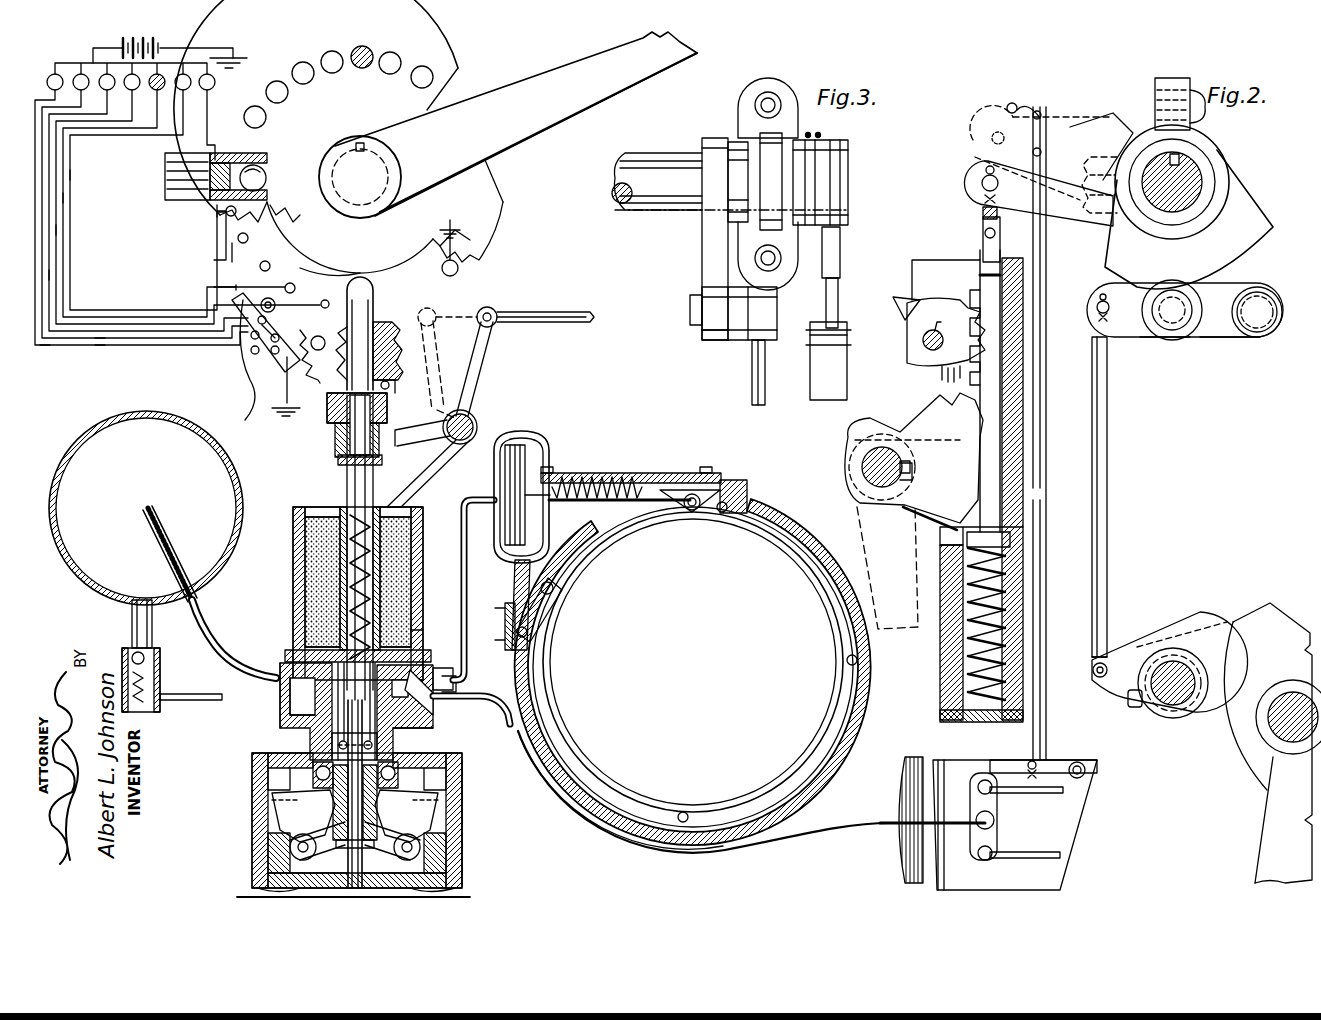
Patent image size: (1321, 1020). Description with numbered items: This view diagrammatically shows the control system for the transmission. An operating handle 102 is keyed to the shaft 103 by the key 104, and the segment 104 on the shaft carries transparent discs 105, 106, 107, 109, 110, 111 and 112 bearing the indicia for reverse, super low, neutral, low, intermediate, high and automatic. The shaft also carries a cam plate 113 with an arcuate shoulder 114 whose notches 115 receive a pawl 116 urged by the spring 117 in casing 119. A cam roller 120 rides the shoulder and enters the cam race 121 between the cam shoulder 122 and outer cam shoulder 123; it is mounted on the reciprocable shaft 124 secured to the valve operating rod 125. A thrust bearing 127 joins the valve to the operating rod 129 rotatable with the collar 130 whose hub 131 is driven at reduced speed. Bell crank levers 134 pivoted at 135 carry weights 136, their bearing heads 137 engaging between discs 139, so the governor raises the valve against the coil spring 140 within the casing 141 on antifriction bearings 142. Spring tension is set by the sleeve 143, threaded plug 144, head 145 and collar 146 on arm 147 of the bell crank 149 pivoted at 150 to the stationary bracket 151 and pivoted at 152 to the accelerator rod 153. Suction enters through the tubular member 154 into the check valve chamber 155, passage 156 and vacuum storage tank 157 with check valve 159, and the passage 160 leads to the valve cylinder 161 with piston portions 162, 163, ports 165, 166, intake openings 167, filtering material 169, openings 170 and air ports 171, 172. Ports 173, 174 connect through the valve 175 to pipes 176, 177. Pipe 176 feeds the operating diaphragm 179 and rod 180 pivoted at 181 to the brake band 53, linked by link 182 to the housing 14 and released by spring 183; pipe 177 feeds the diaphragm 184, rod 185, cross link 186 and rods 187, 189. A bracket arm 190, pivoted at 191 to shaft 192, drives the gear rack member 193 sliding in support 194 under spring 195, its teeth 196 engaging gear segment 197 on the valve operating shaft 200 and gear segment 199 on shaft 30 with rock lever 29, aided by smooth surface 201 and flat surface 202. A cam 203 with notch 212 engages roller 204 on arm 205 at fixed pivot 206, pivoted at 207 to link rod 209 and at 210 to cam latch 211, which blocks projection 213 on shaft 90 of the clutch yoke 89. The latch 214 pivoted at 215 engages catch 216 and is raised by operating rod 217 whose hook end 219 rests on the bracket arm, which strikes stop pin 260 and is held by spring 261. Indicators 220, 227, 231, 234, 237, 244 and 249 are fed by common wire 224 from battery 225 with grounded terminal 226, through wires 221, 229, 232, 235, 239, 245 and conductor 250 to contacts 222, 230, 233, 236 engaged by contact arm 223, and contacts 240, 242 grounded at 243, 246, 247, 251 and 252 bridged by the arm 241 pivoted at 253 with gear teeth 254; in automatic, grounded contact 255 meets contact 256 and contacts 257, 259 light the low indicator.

In FIG. 2, the housing 14 is at (750, 490).
In FIG. 2, the rock lever 29 is at (858, 535).
In FIG. 2, the shaft 30 is at (870, 462).
In FIG. 2, the brake band 53 is at (770, 512).
In FIG. 2, the clutch operating yoke or lever 89 is at (1265, 815).
In FIG. 2, the shaft 90 is at (1260, 725).
In FIG. 2, the operating handle 102 is at (536, 74).
In FIG. 2, the shaft 103 is at (395, 168).
In FIG. 3, the shaft 103 is at (660, 212).
In FIG. 2, the segment 104 is at (458, 68).
In FIG. 2, the transparent disc 105 is at (421, 89).
In FIG. 2, the transparent disc 106 is at (390, 75).
In FIG. 2, the disc 107 is at (363, 69).
In FIG. 2, the disc 109 is at (312, 78).
In FIG. 2, the disc 110 is at (287, 100).
In FIG. 2, the disc 111 is at (264, 124).
In FIG. 2, the disc 112 is at (258, 140).
In FIG. 2, the cam plate 113 is at (358, 258).
In FIG. 2, the arcuate shoulder 114 is at (318, 258).
In FIG. 2, the notches 115 is at (267, 179).
In FIG. 2, the pawl 116 is at (226, 211).
In FIG. 2, the spring 117 is at (208, 156).
In FIG. 2, the casing 119 is at (167, 176).
In FIG. 2, the cam roller 120 is at (360, 277).
In FIG. 2, the cam race 121 is at (480, 311).
In FIG. 2, the cam shoulder 122 is at (427, 237).
In FIG. 2, the outer cam shoulder 123 is at (460, 242).
In FIG. 2, the reciprocable shaft 124 is at (385, 388).
In FIG. 2, the valve operating rod 125 is at (348, 484).
In FIG. 2, the thrust bearing 127 is at (395, 740).
In FIG. 2, the operating rod 129 is at (460, 822).
In FIG. 2, the collar or drum 130 is at (460, 862).
In FIG. 2, the hub 131 is at (262, 750).
In FIG. 2, the bell crank levers 134 is at (272, 795).
In FIG. 2, the pivot 135 is at (460, 840).
In FIG. 2, the weights 136 is at (460, 800).
In FIG. 2, the bearing head 137 is at (290, 840).
In FIG. 2, the spaced discs or collars 139 is at (280, 815).
In FIG. 2, the coil spring 140 is at (345, 582).
In FIG. 2, the casing 141 is at (268, 768).
In FIG. 2, the antifriction bearings 142 is at (462, 758).
In FIG. 2, the sleeve 143 is at (346, 470).
In FIG. 2, the threaded plug 144 is at (330, 440).
In FIG. 2, the head 145 is at (340, 400).
In FIG. 2, the collar 146 is at (330, 420).
In FIG. 2, the arm 147 is at (395, 446).
In FIG. 2, the bell crank 149 is at (490, 360).
In FIG. 2, the pivot 150 is at (470, 418).
In FIG. 2, the stationary bracket 151 is at (440, 478).
In FIG. 2, the pivot 152 is at (497, 322).
In FIG. 2, the rod 153 is at (580, 322).
In FIG. 2, the tubular member 154 is at (190, 694).
In FIG. 2, the check valve chamber 155 is at (160, 668).
In FIG. 2, the passage 156 is at (152, 624).
In FIG. 2, the vacuum storage tank 157 is at (243, 512).
In FIG. 2, the check valve 159 is at (148, 654).
In FIG. 2, the passage 160 is at (205, 615).
In FIG. 2, the valve cylinder 161 is at (280, 688).
In FIG. 2, the piston portion 162 is at (300, 712).
In FIG. 2, the piston portion 163 is at (300, 652).
In FIG. 2, the port 165 is at (282, 663).
In FIG. 2, the valve port 166 is at (332, 740).
In FIG. 2, the intake openings 167 is at (306, 510).
In FIG. 2, the filtering material 169 is at (300, 546).
In FIG. 2, the openings 170 is at (416, 622).
In FIG. 2, the air port 171 is at (312, 660).
In FIG. 2, the air port 172 is at (290, 698).
In FIG. 2, the port 173 is at (420, 663).
In FIG. 2, the port 174 is at (448, 700).
In FIG. 2, the valve 175 is at (460, 680).
In FIG. 2, the pipe 176 is at (468, 558).
In FIG. 2, the pipe 177 is at (514, 764).
In FIG. 2, the operating diaphragm 179 is at (540, 447).
In FIG. 2, the rod 180 is at (600, 487).
In FIG. 2, the pivot 181 is at (692, 492).
In FIG. 2, the link 182 is at (552, 620).
In FIG. 2, the spring 183 is at (640, 473).
In FIG. 2, the diaphragm 184 is at (903, 757).
In FIG. 2, the rod 185 is at (945, 790).
In FIG. 2, the cross link 186 is at (1000, 840).
In FIG. 2, the rod 187 is at (1060, 790).
In FIG. 2, the rod 189 is at (1060, 858).
In FIG. 2, the bracket arm 190 is at (981, 183).
In FIG. 2, the pivot 191 is at (968, 175).
In FIG. 2, the shaft 192 is at (983, 212).
In FIG. 3, the shaft 192 is at (838, 255).
In FIG. 2, the gear rack member 193 is at (1010, 415).
In FIG. 3, the gear rack member 193 is at (812, 370).
In FIG. 2, the support 194 is at (1012, 470).
In FIG. 2, the spring 195 is at (1008, 590).
In FIG. 2, the teeth 196 is at (985, 330).
In FIG. 2, the gear segment 197 is at (900, 300).
In FIG. 2, the gear segment 199 is at (910, 420).
In FIG. 2, the valve operating shaft 200 is at (925, 345).
In FIG. 2, the smooth surface 201 is at (915, 262).
In FIG. 2, the flat surface 202 is at (980, 500).
In FIG. 2, the cam 203 is at (1200, 200).
In FIG. 3, the cam 203 is at (700, 245).
In FIG. 2, the roller 204 is at (1173, 338).
In FIG. 3, the roller 204 is at (705, 300).
In FIG. 2, the arm 205 is at (1228, 337).
In FIG. 2, the fixed pivot 206 is at (1257, 290).
In FIG. 2, the pivot 207 is at (1098, 300).
In FIG. 2, the link rod 209 is at (1108, 590).
In FIG. 3, the link rod 209 is at (764, 383).
In FIG. 2, the pivot 210 is at (1100, 680).
In FIG. 2, the cam latch 211 is at (1185, 620).
In FIG. 2, the notch 212 is at (1185, 283).
In FIG. 2, the projection 213 is at (1258, 615).
In FIG. 2, the latch 214 is at (1055, 762).
In FIG. 2, the pivot 215 is at (1098, 748).
In FIG. 2, the catch 216 is at (1030, 765).
In FIG. 2, the operating rod 217 is at (1038, 530).
In FIG. 2, the hook end 219 is at (1040, 150).
In FIG. 2, the indicator 220 is at (207, 120).
In FIG. 2, the wire 221 is at (63, 198).
In FIG. 2, the contact 222 is at (296, 283).
In FIG. 2, the contact arm 223 is at (240, 243).
In FIG. 2, the common wire 224 is at (82, 74).
In FIG. 2, the battery 225 is at (161, 45).
In FIG. 2, the terminal 226 is at (233, 56).
In FIG. 2, the indicator 227 is at (183, 120).
In FIG. 2, the wire 229 is at (70, 175).
In FIG. 2, the contact 230 is at (270, 260).
In FIG. 2, the indicator 231 is at (156, 121).
In FIG. 2, the wire 232 is at (56, 230).
In FIG. 2, the contact 233 is at (232, 258).
In FIG. 2, the low gear indicator 234 is at (132, 121).
In FIG. 2, the wire 235 is at (49, 275).
In FIG. 2, the contact 236 is at (238, 237).
In FIG. 2, the intermediate gear indicator 237 is at (107, 114).
In FIG. 2, the conductor wire 239 is at (100, 345).
In FIG. 2, the contact 240 is at (236, 298).
In FIG. 2, the arm 241 is at (318, 339).
In FIG. 2, the contact 242 is at (287, 380).
In FIG. 2, the ground 243 is at (287, 395).
In FIG. 2, the high gear indicator 244 is at (81, 107).
In FIG. 2, the wire 245 is at (100, 338).
In FIG. 2, the contact 246 is at (245, 345).
In FIG. 2, the grounded contact 247 is at (268, 352).
In FIG. 2, the overdrive indicator 249 is at (48, 77).
In FIG. 2, the conductor 250 is at (45, 347).
In FIG. 2, the contact 251 is at (268, 340).
In FIG. 2, the ground contact 252 is at (272, 410).
In FIG. 2, the pivot 253 is at (375, 322).
In FIG. 2, the gear teeth 254 is at (373, 363).
In FIG. 2, the grounded contact 255 is at (458, 270).
In FIG. 2, the contact 256 is at (325, 301).
In FIG. 2, the contact 257 is at (264, 298).
In FIG. 2, the contact 259 is at (261, 298).
In FIG. 2, the stop pin 260 is at (1010, 104).
In FIG. 3, the spring 261 is at (822, 137).